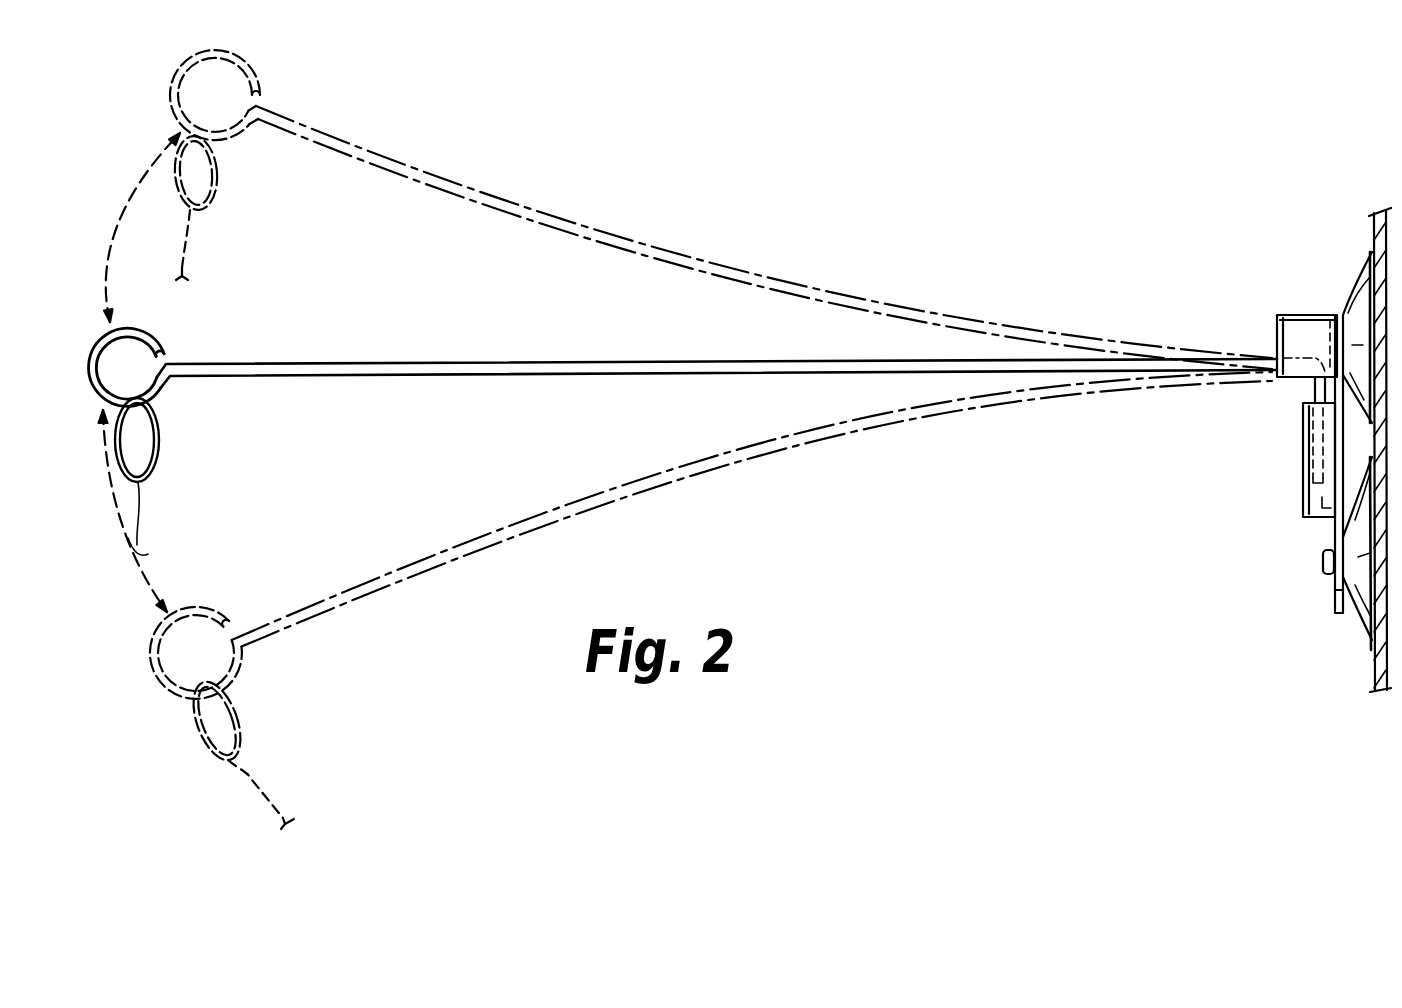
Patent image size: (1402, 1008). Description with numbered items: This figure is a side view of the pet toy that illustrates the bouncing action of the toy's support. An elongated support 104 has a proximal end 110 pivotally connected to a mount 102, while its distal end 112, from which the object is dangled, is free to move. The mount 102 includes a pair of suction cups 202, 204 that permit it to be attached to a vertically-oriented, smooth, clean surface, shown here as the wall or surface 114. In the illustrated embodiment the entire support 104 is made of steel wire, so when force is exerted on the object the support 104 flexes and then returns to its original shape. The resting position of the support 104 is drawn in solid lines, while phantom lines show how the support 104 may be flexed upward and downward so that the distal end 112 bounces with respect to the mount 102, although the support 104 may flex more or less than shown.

The mount 102 is at (1292, 315).
The elongated support 104 is at (490, 363).
The proximal end 110 is at (1288, 378).
The distal end 112 is at (150, 336).
The wall 114 is at (1380, 657).
The suction cup 202 is at (1360, 291).
The suction cup 204 is at (1360, 598).